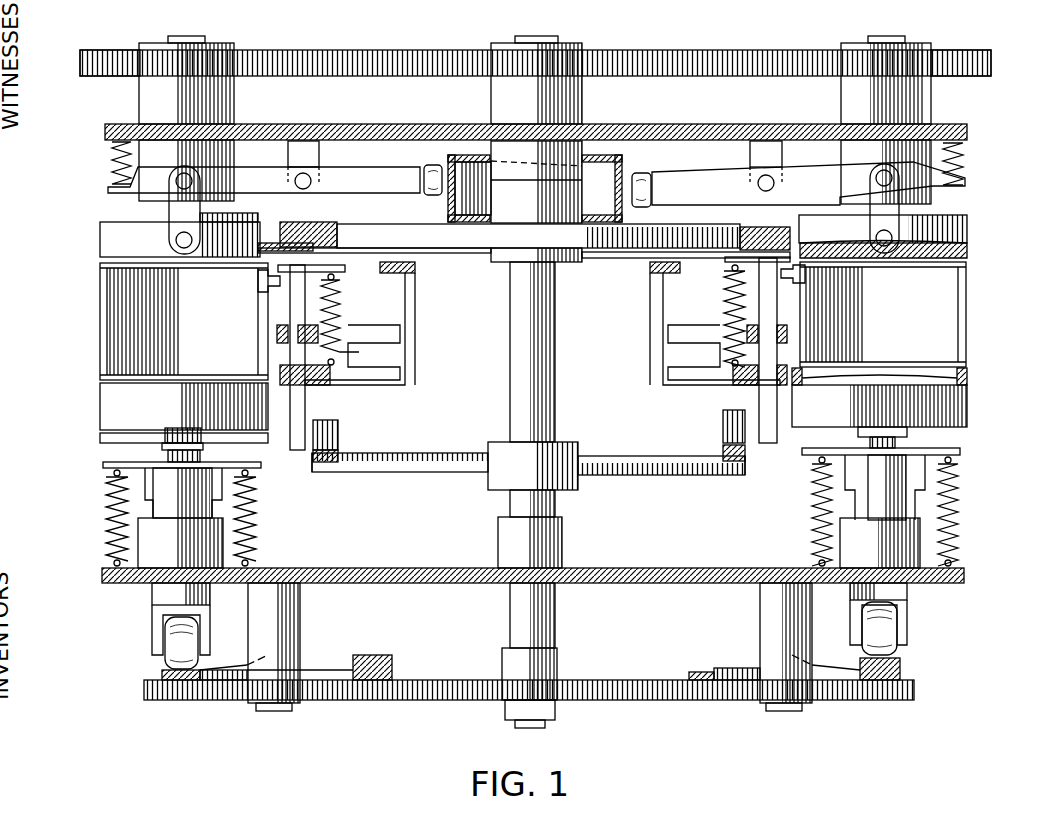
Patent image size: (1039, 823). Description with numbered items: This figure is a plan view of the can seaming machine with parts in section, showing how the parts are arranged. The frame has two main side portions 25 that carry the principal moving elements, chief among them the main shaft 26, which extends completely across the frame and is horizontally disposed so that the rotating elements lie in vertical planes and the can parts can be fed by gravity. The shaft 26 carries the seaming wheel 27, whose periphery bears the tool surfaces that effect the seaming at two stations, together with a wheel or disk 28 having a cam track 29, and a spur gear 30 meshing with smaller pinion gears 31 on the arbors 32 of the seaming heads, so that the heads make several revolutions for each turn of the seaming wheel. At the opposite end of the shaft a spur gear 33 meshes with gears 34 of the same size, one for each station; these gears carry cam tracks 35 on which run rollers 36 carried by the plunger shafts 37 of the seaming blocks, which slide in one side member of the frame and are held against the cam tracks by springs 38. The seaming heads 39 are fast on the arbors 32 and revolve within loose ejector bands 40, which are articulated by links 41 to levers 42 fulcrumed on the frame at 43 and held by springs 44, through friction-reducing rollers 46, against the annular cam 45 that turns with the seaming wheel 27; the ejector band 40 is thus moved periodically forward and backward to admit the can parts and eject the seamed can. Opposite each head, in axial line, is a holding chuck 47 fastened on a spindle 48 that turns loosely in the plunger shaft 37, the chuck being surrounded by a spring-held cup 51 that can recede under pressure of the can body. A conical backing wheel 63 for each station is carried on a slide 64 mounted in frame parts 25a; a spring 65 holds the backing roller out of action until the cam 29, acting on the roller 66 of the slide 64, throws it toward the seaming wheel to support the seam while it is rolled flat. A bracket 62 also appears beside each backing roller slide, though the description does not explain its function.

The side portions of the frame 25 is at (645, 133).
The frame parts 25a is at (730, 374).
The main shaft 26 is at (555, 326).
The seaming wheel 27 is at (480, 238).
The wheel or disk 28 is at (408, 472).
The cam track 29 is at (385, 455).
The spur gear 30 is at (590, 60).
The pinion gears 31 is at (130, 52).
The arbors 32 is at (185, 38).
The spur gear 33 is at (475, 705).
The gears 34 is at (320, 702).
The cam tracks 35 is at (370, 658).
The rollers 36 is at (165, 665).
The plunger shafts 37 is at (167, 508).
The springs 38 is at (108, 522).
The seaming heads 39 is at (930, 262).
The ejector bands 40 is at (968, 233).
The links 41 is at (170, 208).
The levers 42 is at (536, 183).
The fulcrum 43 is at (535, 166).
The springs 44 is at (112, 153).
The cam 45 is at (446, 208).
The rollers 46 is at (428, 170).
The holding chucks 47 is at (869, 377).
The spindles 48 is at (163, 451).
The cup 51 is at (184, 413).
The bracket 62 is at (652, 283).
The backing wheel 63 is at (258, 284).
The slide 64 is at (290, 313).
The spring 65 is at (338, 302).
The roller 66 is at (338, 428).